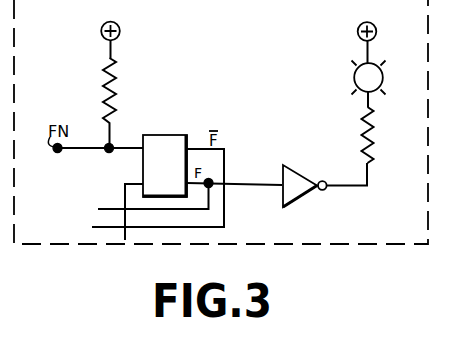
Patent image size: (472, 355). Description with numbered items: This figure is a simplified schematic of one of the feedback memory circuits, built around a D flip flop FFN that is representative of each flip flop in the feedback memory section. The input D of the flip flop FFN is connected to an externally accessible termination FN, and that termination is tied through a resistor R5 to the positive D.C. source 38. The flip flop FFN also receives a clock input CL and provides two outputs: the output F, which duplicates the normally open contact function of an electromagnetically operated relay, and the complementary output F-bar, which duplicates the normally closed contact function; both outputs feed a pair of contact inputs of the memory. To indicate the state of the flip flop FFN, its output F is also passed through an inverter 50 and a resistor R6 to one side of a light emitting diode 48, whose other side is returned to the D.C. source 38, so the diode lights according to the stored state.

The D.C. source 38 is at (120, 30).
The light emitting diode 48 is at (354, 77).
The inverter 50 is at (293, 171).
The resistor R5 is at (116, 83).
The resistor R6 is at (374, 129).
The flip flop FFN is at (153, 135).